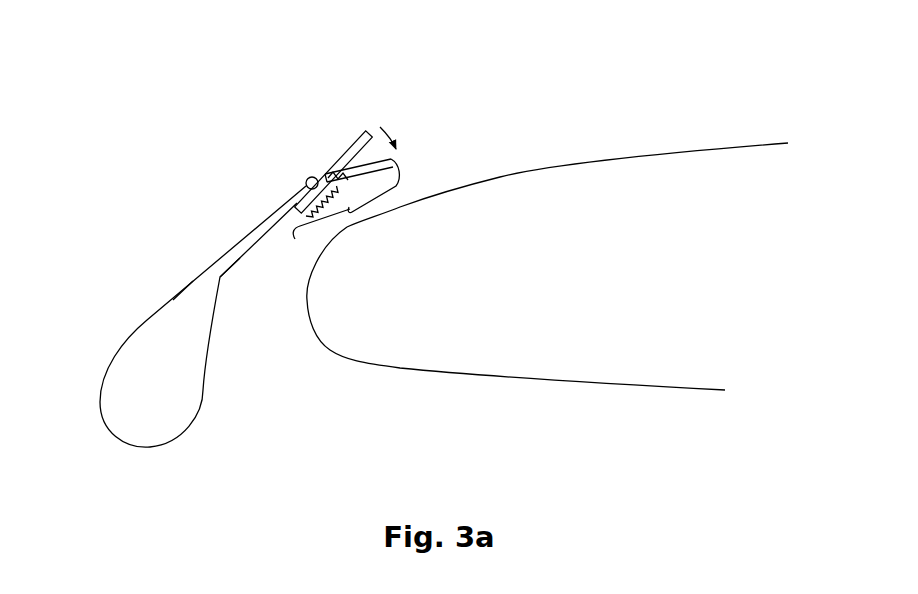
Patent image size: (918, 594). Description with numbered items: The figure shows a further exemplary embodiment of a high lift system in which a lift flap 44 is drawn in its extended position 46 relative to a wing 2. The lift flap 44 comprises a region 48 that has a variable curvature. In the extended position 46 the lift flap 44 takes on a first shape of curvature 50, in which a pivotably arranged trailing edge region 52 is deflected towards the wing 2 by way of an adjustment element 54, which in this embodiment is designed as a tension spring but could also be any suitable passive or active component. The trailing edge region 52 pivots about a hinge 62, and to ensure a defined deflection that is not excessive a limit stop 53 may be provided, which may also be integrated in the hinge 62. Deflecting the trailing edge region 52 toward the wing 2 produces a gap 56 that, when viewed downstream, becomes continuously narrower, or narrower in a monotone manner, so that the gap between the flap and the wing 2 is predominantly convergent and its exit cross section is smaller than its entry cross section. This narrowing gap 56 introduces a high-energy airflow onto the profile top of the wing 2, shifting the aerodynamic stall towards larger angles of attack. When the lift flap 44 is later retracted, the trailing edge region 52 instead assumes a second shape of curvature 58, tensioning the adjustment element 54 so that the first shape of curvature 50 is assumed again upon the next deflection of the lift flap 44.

The wing 2 is at (350, 335).
The lift flap 44 is at (158, 324).
The extended position 46 is at (242, 155).
The region 48 is at (346, 206).
The first shape of curvature 50 is at (409, 147).
The trailing edge region 52 is at (353, 167).
The limit stop 53 is at (320, 172).
The adjustment element 54 is at (296, 194).
The gap 56 is at (439, 166).
The second shape of curvature 58 is at (395, 111).
The hinge 62 is at (306, 180).